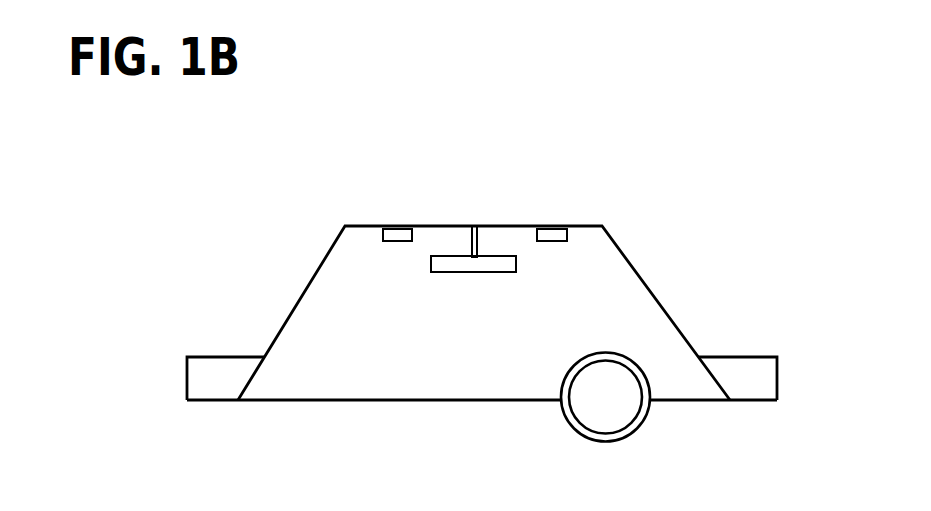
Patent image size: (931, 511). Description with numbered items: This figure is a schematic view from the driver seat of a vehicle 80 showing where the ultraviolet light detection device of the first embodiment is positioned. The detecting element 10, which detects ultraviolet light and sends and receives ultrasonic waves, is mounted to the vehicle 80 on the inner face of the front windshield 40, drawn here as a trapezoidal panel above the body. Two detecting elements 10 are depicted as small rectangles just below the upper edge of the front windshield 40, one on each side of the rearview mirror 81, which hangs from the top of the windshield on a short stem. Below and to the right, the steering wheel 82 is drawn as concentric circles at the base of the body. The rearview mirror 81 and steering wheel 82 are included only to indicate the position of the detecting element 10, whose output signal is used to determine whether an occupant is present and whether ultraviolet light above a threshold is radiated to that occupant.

The detecting element 10 is at (397, 233).
The front windshield 40 is at (598, 297).
The vehicle 80 is at (487, 306).
The rearview mirror 81 is at (481, 262).
The steering wheel 82 is at (641, 414).